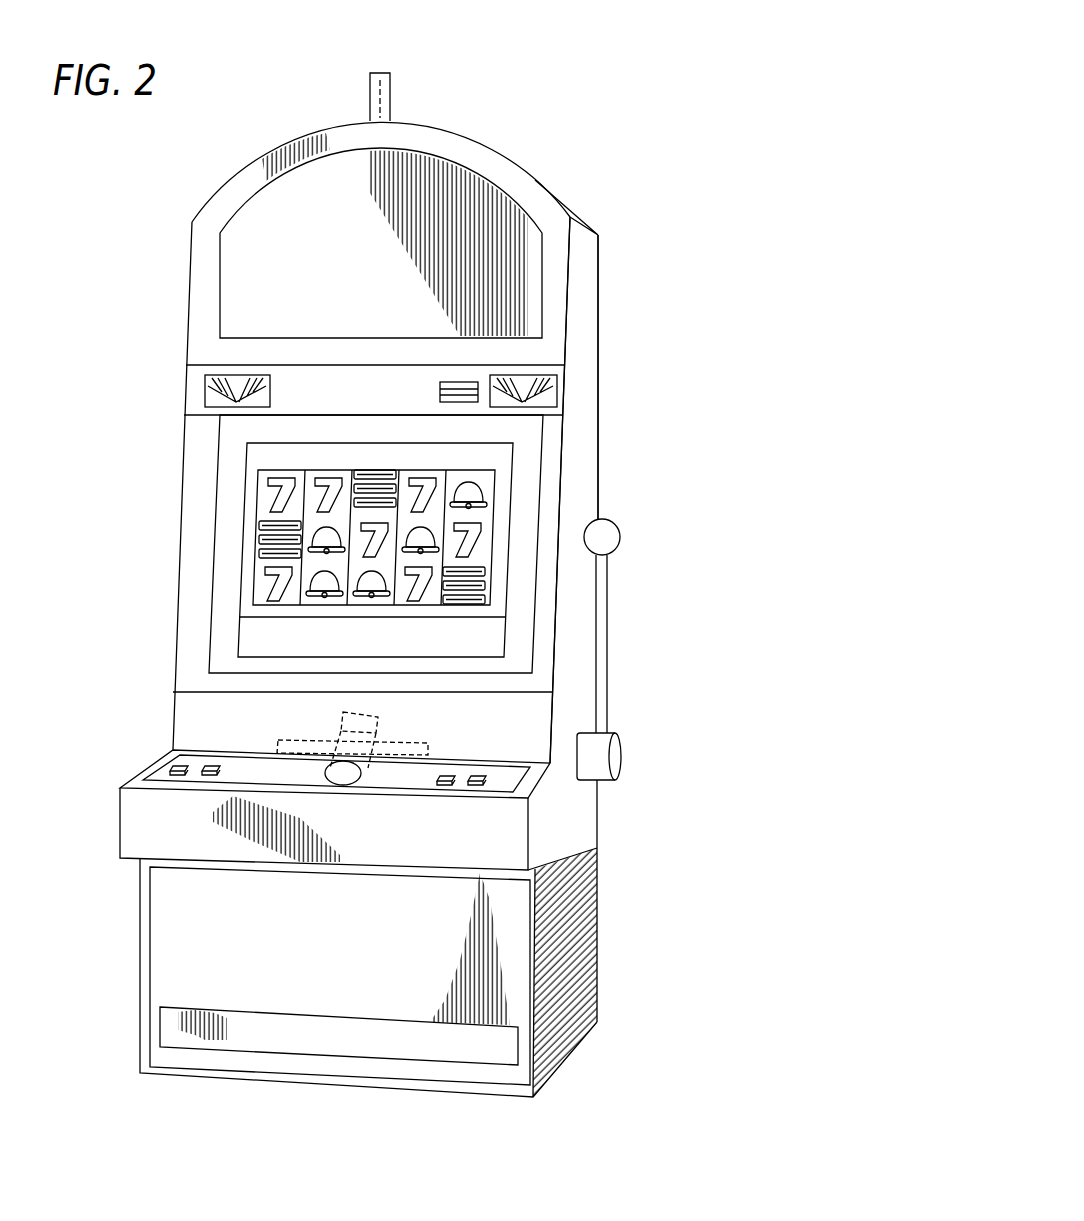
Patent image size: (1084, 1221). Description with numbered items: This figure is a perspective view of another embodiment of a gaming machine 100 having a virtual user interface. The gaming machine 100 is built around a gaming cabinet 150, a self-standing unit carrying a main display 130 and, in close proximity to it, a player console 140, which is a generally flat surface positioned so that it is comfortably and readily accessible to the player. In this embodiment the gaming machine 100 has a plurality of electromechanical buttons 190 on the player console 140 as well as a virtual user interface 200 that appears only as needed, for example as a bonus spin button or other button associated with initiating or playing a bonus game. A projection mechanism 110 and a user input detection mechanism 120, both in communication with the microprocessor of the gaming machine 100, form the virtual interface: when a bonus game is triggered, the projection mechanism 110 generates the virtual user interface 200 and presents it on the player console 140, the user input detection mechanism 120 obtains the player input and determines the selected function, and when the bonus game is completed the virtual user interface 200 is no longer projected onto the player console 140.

The gaming machine 100 is at (627, 165).
The projection mechanism 110 is at (365, 715).
The user input detection mechanism 120 is at (427, 748).
The main display 130 is at (502, 507).
The player console 140 is at (245, 768).
The gaming cabinet 150 is at (600, 382).
The electromechanical buttons 190 is at (473, 777).
The virtual user interface 200 is at (340, 777).